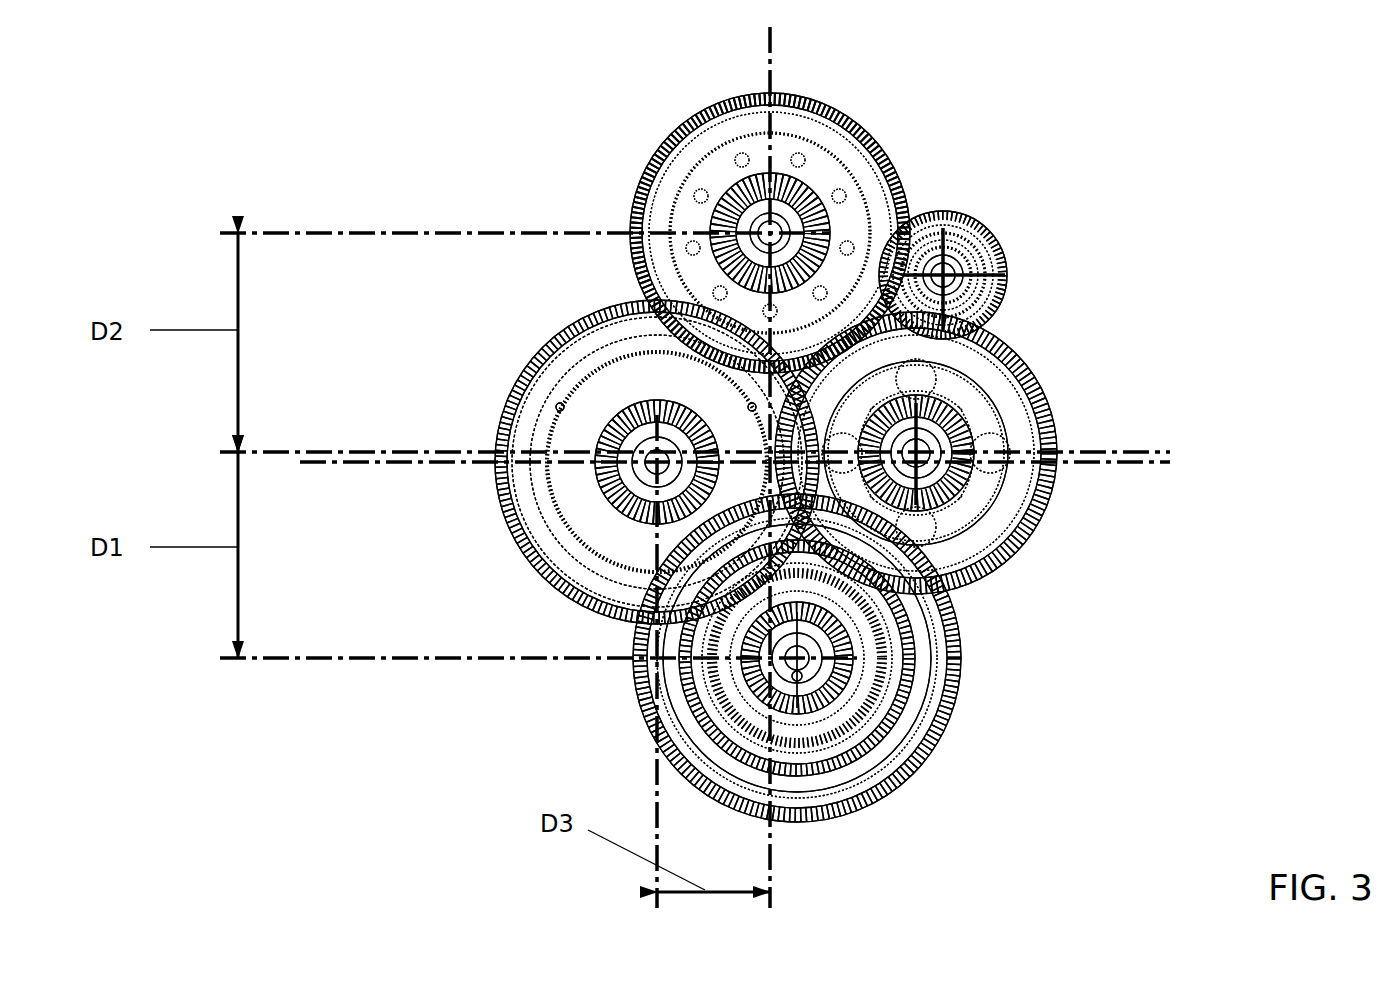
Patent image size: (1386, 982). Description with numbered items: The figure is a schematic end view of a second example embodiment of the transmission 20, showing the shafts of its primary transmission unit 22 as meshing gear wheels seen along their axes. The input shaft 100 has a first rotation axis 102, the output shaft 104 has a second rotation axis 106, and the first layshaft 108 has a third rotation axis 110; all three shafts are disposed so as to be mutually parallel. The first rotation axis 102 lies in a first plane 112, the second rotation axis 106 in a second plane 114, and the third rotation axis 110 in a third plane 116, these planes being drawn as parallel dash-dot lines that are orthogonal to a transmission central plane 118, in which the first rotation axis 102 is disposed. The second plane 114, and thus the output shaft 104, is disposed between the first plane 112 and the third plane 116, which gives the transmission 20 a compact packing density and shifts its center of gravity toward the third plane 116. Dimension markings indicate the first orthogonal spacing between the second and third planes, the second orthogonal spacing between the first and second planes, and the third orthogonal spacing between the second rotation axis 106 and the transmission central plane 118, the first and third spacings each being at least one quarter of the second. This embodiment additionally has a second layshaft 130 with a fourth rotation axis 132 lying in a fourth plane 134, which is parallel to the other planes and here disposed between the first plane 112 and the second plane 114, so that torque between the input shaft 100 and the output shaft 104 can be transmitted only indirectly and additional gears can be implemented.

The transmission 20 is at (763, 460).
The primary transmission unit 22 is at (1162, 171).
The input shaft 100 is at (802, 198).
The first rotation axis 102 is at (770, 233).
The output shaft 104 is at (594, 452).
The second rotation axis 106 is at (657, 462).
The first layshaft 108 is at (842, 669).
The third rotation axis 110 is at (797, 658).
The first plane 112 is at (455, 233).
The second plane 114 is at (1142, 463).
The third plane 116 is at (447, 657).
The transmission central plane 118 is at (770, 38).
The second layshaft 130 is at (990, 437).
The fourth rotation axis 132 is at (916, 453).
The fourth plane 134 is at (1133, 451).